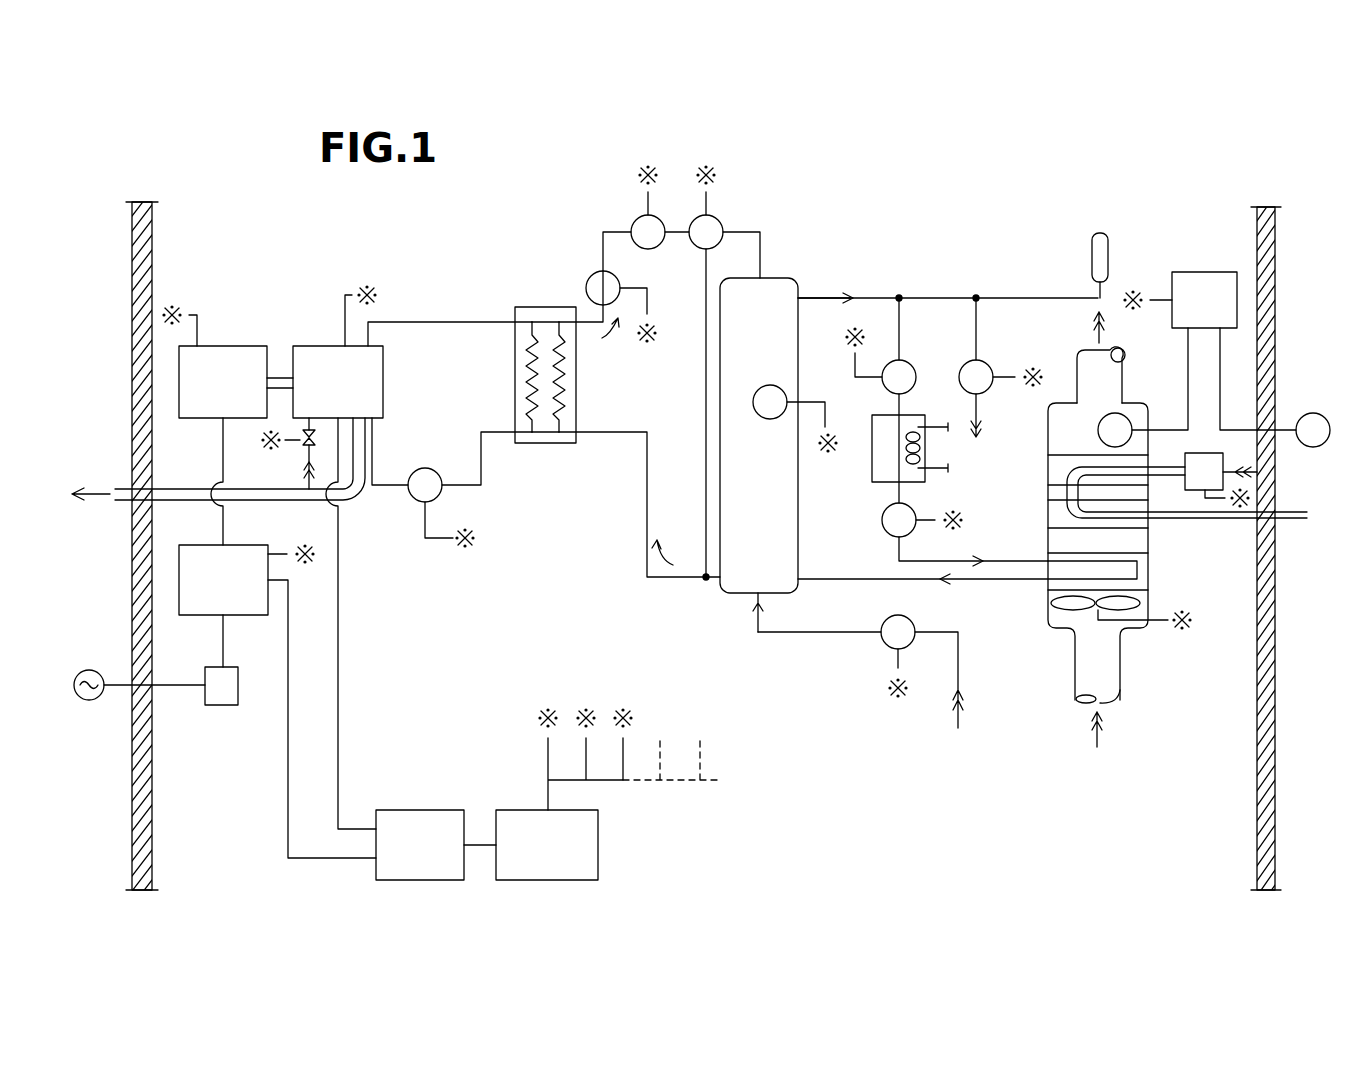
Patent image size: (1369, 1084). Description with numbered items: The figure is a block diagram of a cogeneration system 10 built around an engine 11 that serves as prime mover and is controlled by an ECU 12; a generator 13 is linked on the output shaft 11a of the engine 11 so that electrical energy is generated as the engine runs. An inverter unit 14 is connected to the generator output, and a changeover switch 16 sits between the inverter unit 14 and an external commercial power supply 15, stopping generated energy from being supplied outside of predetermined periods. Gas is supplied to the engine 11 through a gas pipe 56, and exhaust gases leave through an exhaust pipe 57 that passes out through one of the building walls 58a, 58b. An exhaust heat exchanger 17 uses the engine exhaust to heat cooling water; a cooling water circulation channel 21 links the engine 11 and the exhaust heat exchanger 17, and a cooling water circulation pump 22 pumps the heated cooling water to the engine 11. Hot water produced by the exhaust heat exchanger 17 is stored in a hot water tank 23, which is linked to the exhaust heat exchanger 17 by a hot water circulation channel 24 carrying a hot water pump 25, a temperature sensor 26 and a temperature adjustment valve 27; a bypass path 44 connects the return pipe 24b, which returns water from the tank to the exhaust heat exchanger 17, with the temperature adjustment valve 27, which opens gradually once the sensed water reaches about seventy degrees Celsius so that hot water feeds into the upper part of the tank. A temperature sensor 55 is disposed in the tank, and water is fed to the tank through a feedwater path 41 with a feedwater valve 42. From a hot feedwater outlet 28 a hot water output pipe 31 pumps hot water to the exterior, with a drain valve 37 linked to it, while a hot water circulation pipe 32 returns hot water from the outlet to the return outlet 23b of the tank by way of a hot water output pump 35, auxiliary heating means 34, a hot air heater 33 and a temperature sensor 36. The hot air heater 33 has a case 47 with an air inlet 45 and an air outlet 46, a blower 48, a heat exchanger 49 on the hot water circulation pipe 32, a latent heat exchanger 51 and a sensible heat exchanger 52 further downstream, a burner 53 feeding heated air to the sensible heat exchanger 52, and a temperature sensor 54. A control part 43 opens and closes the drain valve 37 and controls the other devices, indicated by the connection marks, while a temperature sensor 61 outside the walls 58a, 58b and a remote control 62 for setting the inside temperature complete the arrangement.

The cogeneration system 10 is at (1098, 178).
The engine 11 is at (320, 345).
The output shaft 11a is at (281, 377).
The ECU 12 is at (419, 881).
The generator 13 is at (222, 345).
The inverter unit 14 is at (178, 562).
The external commercial power supply 15 is at (86, 701).
The changeover switch 16 is at (220, 700).
The exhaust heat exchanger 17 is at (557, 443).
The cooling water circulation channel 21 is at (438, 320).
The cooling water circulation pump 22 is at (425, 466).
The hot water tank 23 is at (777, 303).
The return outlet 23b is at (800, 583).
The hot water circulation channel 24 is at (617, 228).
The return pipe 24b is at (660, 580).
The hot water pump 25 is at (585, 285).
The temperature sensor 26 is at (660, 215).
The temperature adjustment valve 27 is at (720, 218).
The hot feedwater outlet 28 is at (802, 294).
The hot water output pipe 31 is at (960, 297).
The hot water circulation pipe 32 is at (900, 325).
The hot air heater 33 is at (1030, 608).
The auxiliary heating means 34 is at (880, 467).
The hot water output pump 35 is at (913, 370).
The temperature sensor 36 is at (882, 532).
The drain valve 37 is at (990, 367).
The feedwater path 41 is at (957, 665).
The feedwater valve 42 is at (880, 640).
The control part 43 is at (543, 881).
The bypass path 44 is at (705, 382).
The air inlet 45 is at (1105, 705).
The air outlet 46 is at (1125, 352).
The case 47 is at (1165, 553).
The blower 48 is at (1135, 603).
The heat exchanger 49 is at (1138, 572).
The latent heat exchanger 51 is at (1058, 515).
The sensible heat exchanger 52 is at (1060, 470).
The burner 53 is at (1215, 463).
The temperature sensor 54 is at (1098, 427).
The temperature sensor 55 is at (787, 390).
The gas pipe 56 is at (300, 457).
The exhaust pipe 57 is at (120, 488).
The wall 58a is at (143, 201).
The wall 58b is at (1268, 206).
The temperature sensor 61 is at (1313, 412).
The remote control 62 is at (1205, 287).